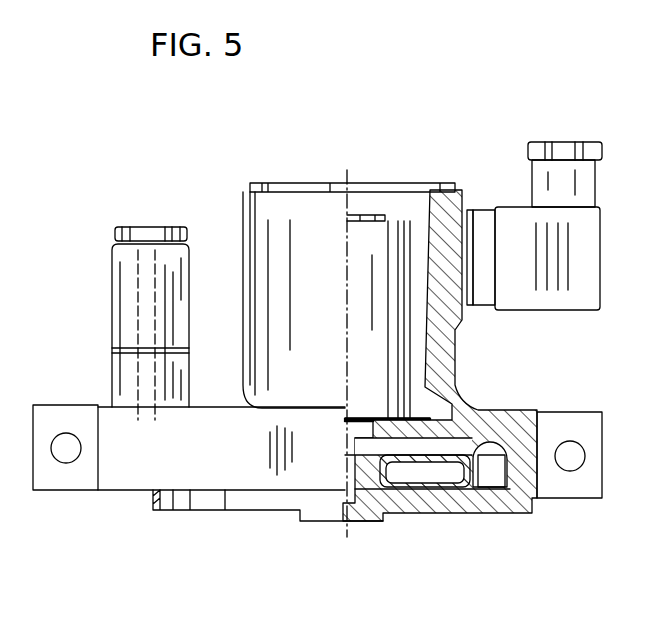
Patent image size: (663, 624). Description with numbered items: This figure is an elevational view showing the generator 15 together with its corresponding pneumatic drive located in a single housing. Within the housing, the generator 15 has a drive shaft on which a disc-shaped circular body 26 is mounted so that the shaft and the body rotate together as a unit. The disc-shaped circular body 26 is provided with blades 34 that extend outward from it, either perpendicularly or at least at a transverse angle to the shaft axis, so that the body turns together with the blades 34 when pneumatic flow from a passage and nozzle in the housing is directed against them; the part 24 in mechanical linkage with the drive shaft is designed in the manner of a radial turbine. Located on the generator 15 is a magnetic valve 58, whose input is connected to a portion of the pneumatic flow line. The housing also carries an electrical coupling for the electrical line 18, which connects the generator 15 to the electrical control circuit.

The generator 15 is at (372, 232).
The electrical line 18 is at (592, 140).
The part in mechanical linkage with the drive shaft of the generator 24 is at (183, 470).
The disc-shaped circular body 26 is at (372, 473).
The blades 34 is at (492, 473).
The magnetic valve 58 is at (128, 255).